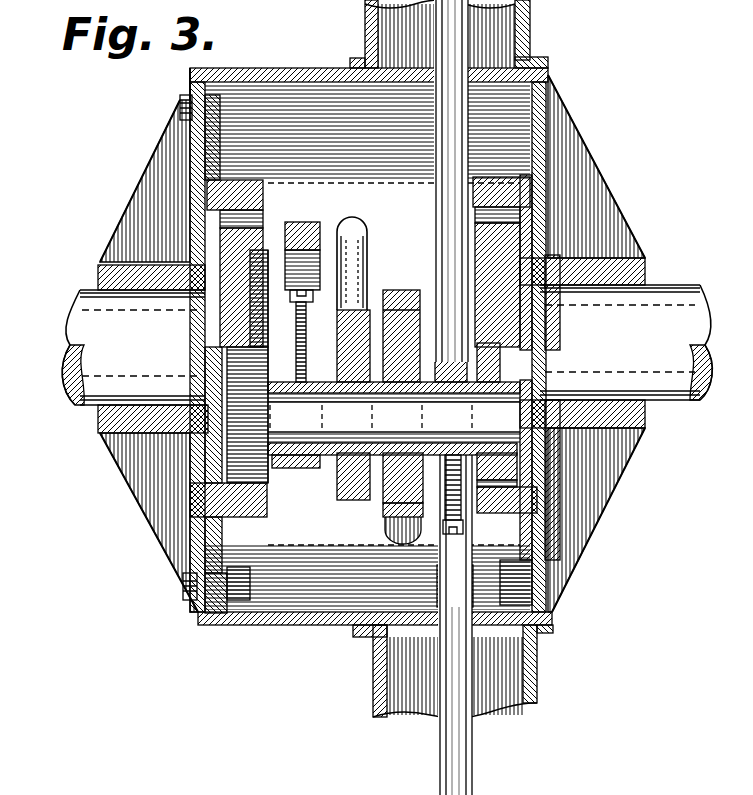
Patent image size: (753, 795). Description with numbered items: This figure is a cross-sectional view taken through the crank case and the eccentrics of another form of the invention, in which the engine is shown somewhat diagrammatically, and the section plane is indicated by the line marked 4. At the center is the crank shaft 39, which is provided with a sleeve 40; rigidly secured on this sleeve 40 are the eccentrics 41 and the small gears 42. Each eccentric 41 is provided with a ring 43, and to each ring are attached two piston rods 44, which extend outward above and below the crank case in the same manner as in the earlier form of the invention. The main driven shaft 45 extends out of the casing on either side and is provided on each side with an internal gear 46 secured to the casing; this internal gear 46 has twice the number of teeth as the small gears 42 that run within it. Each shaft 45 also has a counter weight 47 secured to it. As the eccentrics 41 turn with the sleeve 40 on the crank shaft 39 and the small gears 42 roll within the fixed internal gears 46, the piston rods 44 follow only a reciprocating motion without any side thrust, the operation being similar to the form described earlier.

The hollow shaft / section line 4- 4 is at (500, 380).
The crank shaft 39 is at (292, 470).
The sleeve 40 is at (337, 447).
The eccentric 41 is at (296, 222).
The small gear 42 is at (222, 378).
The ring 43 is at (366, 295).
The piston rod 44 is at (452, 160).
The main driven shaft 45 is at (97, 322).
The internal gear 46 is at (248, 168).
The counter weight 47 is at (240, 247).